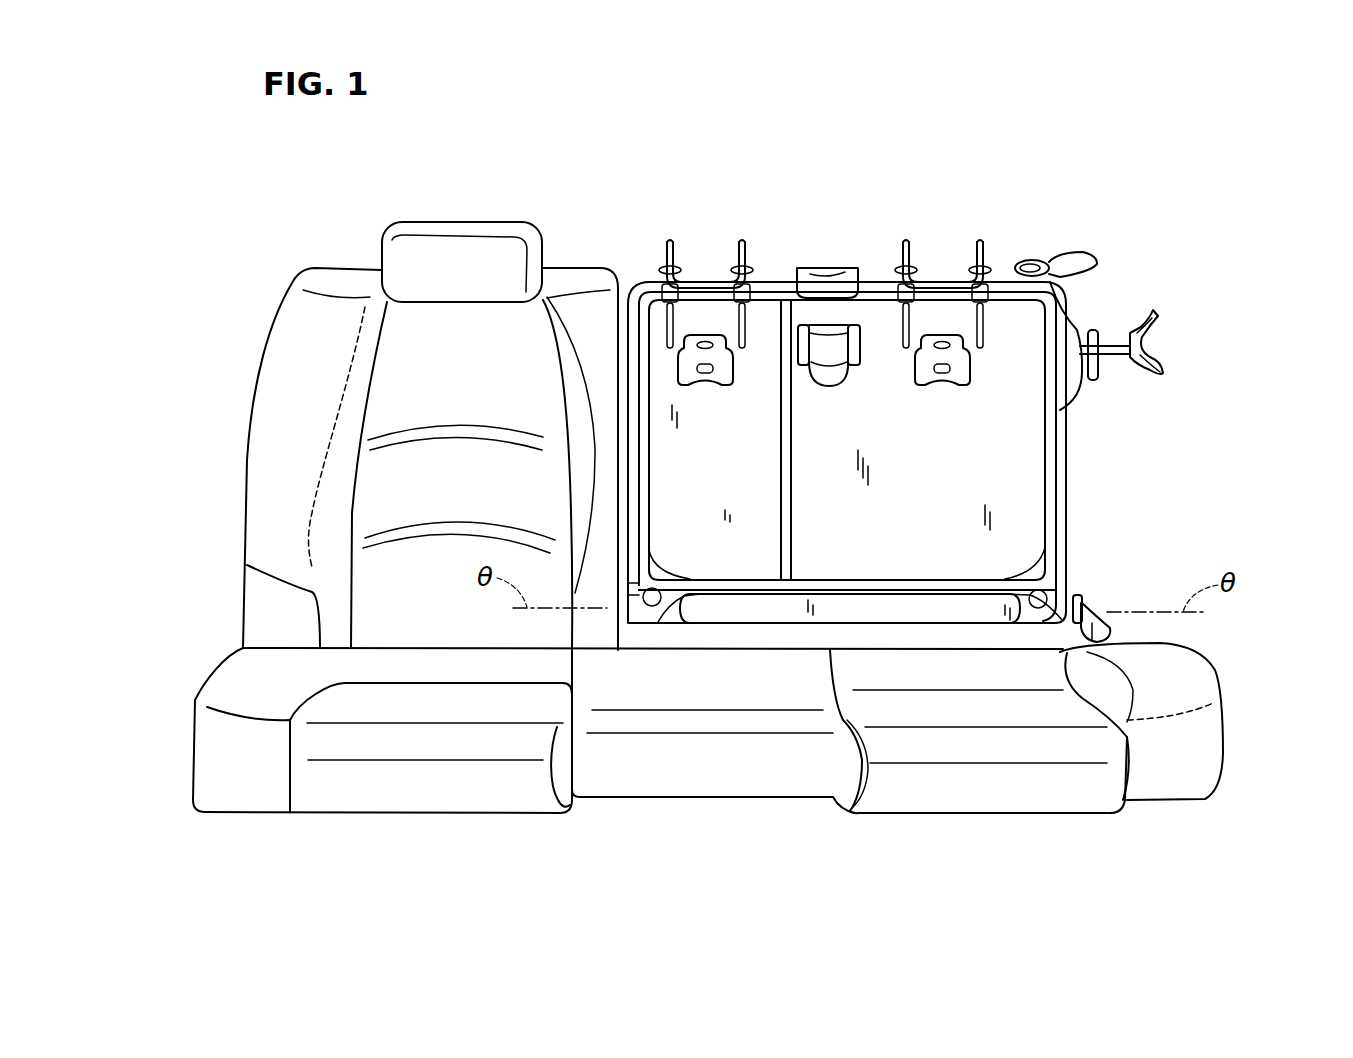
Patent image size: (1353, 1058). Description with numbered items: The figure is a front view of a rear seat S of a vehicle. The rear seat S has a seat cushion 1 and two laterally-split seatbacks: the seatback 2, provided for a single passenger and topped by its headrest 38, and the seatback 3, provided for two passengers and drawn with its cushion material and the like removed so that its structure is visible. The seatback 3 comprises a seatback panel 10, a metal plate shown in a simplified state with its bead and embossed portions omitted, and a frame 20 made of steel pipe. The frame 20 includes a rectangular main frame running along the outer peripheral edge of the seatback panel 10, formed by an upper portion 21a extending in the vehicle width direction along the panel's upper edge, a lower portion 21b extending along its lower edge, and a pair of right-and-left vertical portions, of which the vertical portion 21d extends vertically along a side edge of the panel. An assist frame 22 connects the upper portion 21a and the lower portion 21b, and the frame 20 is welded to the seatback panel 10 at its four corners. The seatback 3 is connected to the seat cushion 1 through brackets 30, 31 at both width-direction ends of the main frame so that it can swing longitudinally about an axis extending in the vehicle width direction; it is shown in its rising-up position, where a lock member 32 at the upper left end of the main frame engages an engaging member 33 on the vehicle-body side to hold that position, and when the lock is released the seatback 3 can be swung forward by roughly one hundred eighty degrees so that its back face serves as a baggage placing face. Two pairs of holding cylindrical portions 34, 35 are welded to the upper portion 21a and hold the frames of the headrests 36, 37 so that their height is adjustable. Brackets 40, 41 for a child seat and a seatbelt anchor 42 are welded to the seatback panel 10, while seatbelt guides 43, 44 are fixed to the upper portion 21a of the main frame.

The rear seat S is at (205, 236).
The seat cushion 1 is at (452, 798).
The seatback 2 is at (380, 377).
The seatback 3 is at (961, 541).
The seatback panel 10 is at (1027, 513).
The frame 20 is at (961, 541).
The upper portion 21a is at (873, 293).
The lower portion 21b is at (890, 590).
The vertical portion 21d is at (645, 472).
The assist frame 22 is at (792, 515).
The bracket 30 is at (1087, 600).
The bracket 31 is at (622, 618).
The lock member 32 is at (1098, 340).
The engaging member 33 is at (1158, 316).
The holding cylindrical portion 34 is at (907, 290).
The holding cylindrical portion 35 is at (662, 290).
The headrest 36 is at (945, 289).
The headrest 37 is at (699, 287).
The headrest 38 is at (447, 250).
The bracket for a child seat 40 is at (962, 383).
The bracket for a child seat 41 is at (722, 383).
The seatbelt anchor 42 is at (833, 352).
The seatbelt guide 43 is at (1038, 262).
The seatbelt guide 44 is at (840, 266).